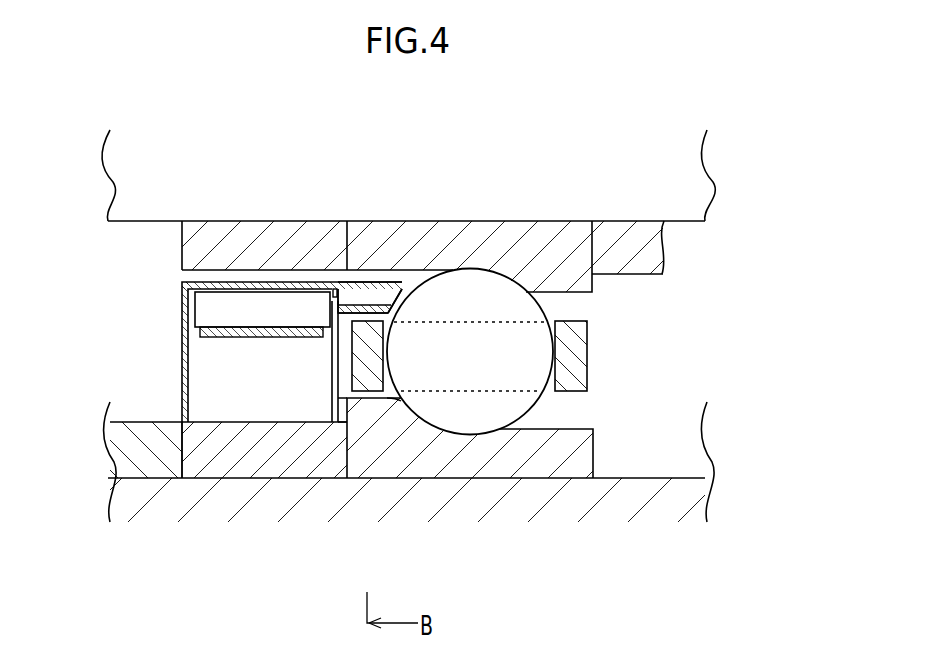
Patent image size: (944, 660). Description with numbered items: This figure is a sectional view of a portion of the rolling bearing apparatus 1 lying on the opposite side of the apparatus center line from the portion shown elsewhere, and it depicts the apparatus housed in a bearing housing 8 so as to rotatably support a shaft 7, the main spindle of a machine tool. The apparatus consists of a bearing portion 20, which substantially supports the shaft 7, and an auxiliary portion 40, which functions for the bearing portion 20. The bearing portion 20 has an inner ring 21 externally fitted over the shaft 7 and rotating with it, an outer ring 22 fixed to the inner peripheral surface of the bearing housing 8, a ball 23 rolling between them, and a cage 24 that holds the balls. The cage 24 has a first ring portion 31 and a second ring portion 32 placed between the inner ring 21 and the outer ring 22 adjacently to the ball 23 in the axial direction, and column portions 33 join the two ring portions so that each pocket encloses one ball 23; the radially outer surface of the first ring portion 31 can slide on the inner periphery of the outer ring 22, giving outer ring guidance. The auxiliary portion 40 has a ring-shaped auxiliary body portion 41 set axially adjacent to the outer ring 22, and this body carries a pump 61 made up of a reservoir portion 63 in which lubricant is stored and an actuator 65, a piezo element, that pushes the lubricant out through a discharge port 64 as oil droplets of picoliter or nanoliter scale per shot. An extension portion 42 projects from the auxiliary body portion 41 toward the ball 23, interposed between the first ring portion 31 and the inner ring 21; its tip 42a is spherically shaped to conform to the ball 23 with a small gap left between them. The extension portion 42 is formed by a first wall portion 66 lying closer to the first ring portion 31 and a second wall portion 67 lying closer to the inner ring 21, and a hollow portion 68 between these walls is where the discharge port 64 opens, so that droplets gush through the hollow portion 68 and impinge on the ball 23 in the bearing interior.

The rolling bearing apparatus 1 is at (604, 454).
The shaft 7 is at (130, 221).
The bearing housing 8 is at (132, 476).
The bearing portion 20 is at (540, 480).
The inner ring 21 is at (553, 236).
The outer ring 22 is at (475, 470).
The ball 23 is at (483, 416).
The cage 24 is at (376, 394).
The first ring portion 31 is at (362, 371).
The second ring portion 32 is at (578, 373).
The column portion 33 is at (518, 394).
The auxiliary portion 40 is at (234, 479).
The auxiliary body portion 41 is at (182, 336).
The extension portion 42 is at (367, 282).
The tip 42a is at (394, 302).
The pump 61 is at (225, 350).
The reservoir portion 63 is at (285, 325).
The discharge port 64 is at (335, 288).
The actuator 65 is at (217, 338).
The first wall portion 66 is at (397, 299).
The second wall portion 67 is at (385, 303).
The hollow portion 68 is at (361, 296).